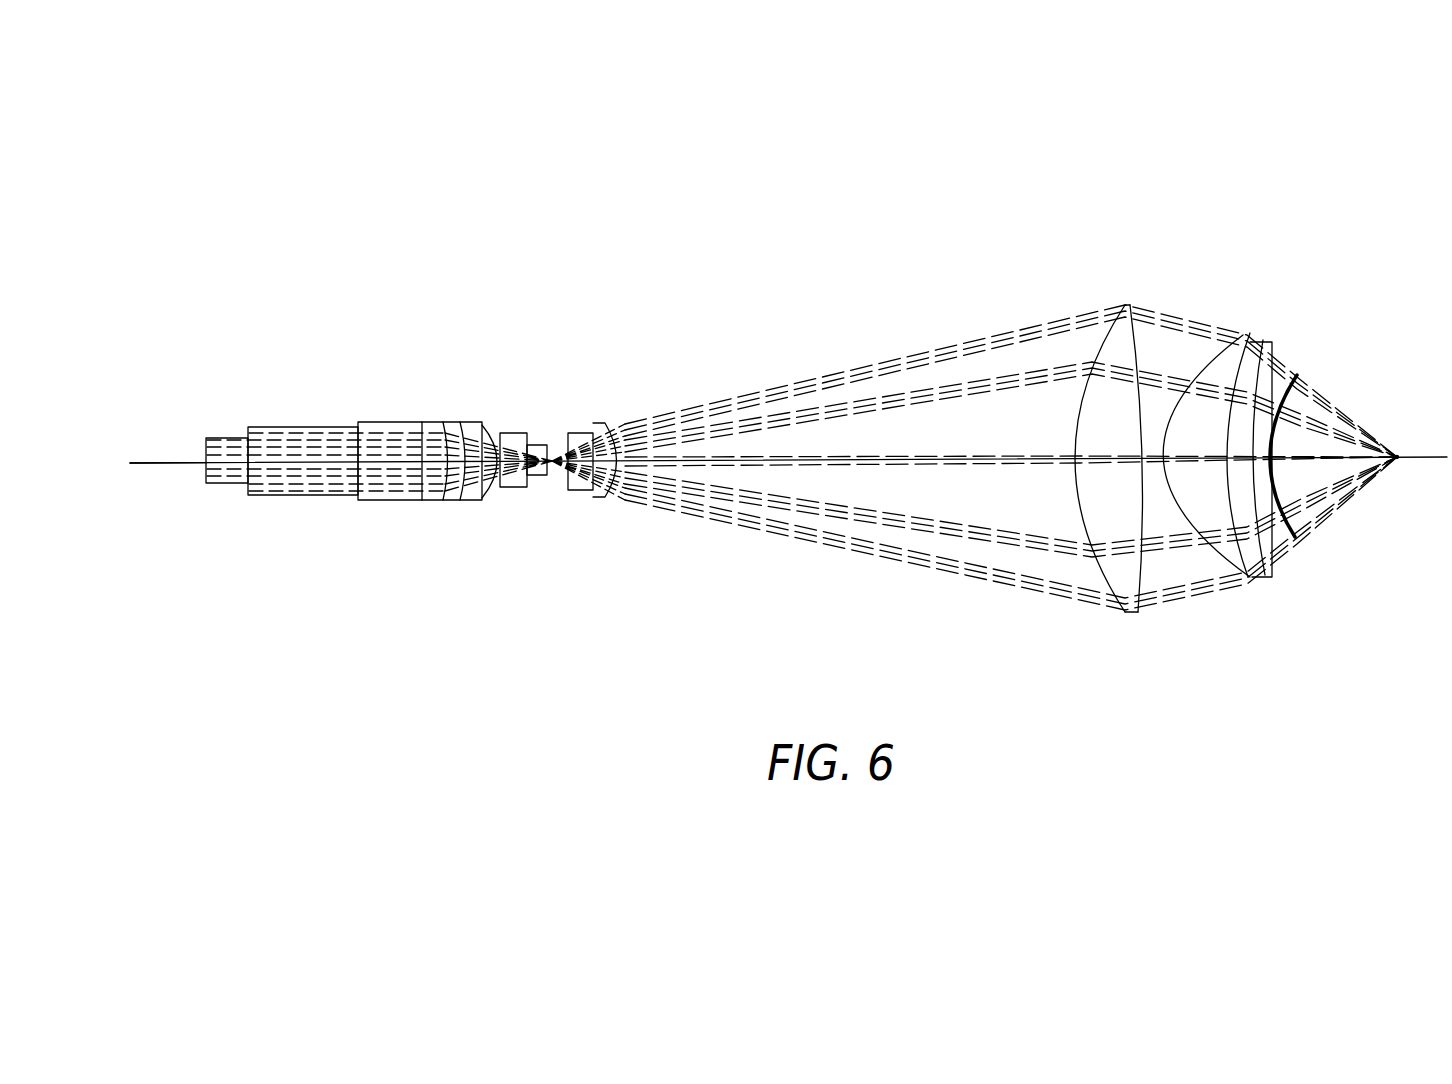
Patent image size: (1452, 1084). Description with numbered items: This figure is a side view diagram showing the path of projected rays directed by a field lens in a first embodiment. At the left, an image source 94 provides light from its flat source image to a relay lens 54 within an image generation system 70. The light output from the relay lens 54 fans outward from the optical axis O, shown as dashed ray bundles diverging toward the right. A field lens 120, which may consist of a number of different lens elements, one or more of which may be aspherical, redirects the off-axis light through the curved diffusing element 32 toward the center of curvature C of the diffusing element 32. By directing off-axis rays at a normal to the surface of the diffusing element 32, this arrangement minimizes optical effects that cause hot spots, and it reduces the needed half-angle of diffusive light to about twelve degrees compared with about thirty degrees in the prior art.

The optical axis O is at (162, 463).
The image source 94 is at (208, 438).
The relay lens 54 is at (603, 390).
The image generation system 70 is at (522, 524).
The field lens 120 is at (1275, 635).
The diffusing element 32 is at (1295, 508).
The center of curvature C is at (1397, 457).